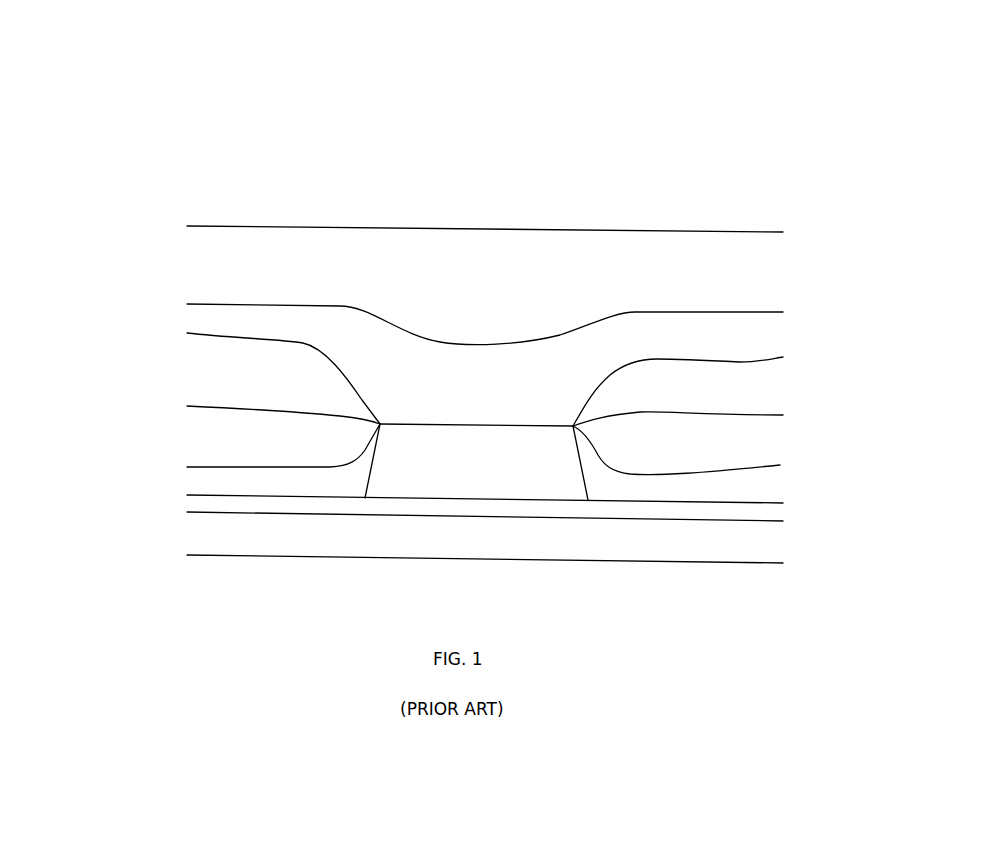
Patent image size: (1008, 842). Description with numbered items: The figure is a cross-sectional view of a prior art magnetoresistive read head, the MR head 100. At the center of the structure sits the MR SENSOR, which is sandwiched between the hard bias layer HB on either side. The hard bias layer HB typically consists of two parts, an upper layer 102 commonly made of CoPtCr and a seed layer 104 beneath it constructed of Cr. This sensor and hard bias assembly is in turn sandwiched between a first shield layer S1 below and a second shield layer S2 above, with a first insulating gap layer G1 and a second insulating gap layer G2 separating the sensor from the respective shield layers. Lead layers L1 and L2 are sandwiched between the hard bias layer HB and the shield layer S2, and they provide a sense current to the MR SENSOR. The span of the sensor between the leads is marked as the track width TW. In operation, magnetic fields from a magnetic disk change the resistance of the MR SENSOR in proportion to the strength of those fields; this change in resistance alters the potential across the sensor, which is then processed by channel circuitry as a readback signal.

The MR head 100 is at (256, 157).
The second shield layer S2 is at (680, 263).
The second insulating gap layer G2 is at (688, 342).
The first lead layer L1 is at (201, 378).
The second lead layer L2 is at (772, 380).
The hard bias layer HB is at (202, 423).
The upper layer 102 is at (185, 452).
The seed layer 104 is at (185, 480).
The first insulating gap layer G1 is at (745, 510).
The first shield layer S1 is at (768, 538).
The track width TW is at (570, 401).
The MR sensor MR SENSOR is at (395, 475).